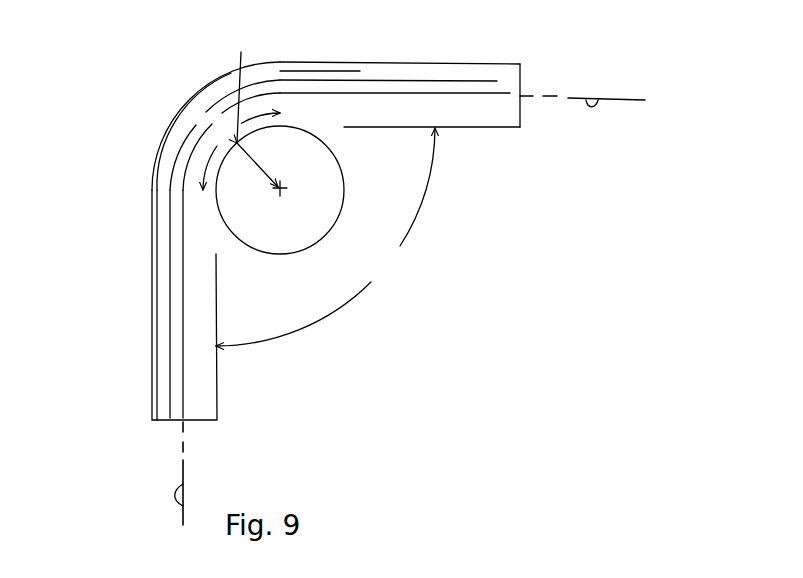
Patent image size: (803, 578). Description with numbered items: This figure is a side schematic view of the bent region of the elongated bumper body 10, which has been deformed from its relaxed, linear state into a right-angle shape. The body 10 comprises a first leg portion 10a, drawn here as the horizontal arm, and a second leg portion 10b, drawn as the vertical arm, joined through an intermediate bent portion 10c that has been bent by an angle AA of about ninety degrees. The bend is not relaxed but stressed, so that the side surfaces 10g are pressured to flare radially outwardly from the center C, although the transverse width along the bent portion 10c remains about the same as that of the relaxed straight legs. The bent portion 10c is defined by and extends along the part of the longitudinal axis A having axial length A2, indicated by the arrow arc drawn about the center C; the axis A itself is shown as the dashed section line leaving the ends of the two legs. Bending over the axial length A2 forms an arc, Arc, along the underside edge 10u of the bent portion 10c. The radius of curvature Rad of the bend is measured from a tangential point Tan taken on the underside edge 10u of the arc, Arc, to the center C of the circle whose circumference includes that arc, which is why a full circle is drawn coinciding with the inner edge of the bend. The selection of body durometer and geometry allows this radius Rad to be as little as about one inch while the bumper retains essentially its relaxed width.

The elongated body 10 is at (112, 135).
The first leg portion 10a is at (470, 72).
The second leg portion 10b is at (157, 297).
The bent portion 10c is at (203, 97).
The underside edge 10u is at (380, 127).
The side surfaces 10g is at (480, 120).
The longitudinal axis A is at (405, 310).
The angle AA is at (325, 237).
The axial length A2 is at (240, 151).
The tangential point Tan is at (247, 86).
The radius of curvature Rad is at (259, 165).
The arc Arc is at (220, 167).
The center C is at (288, 186).